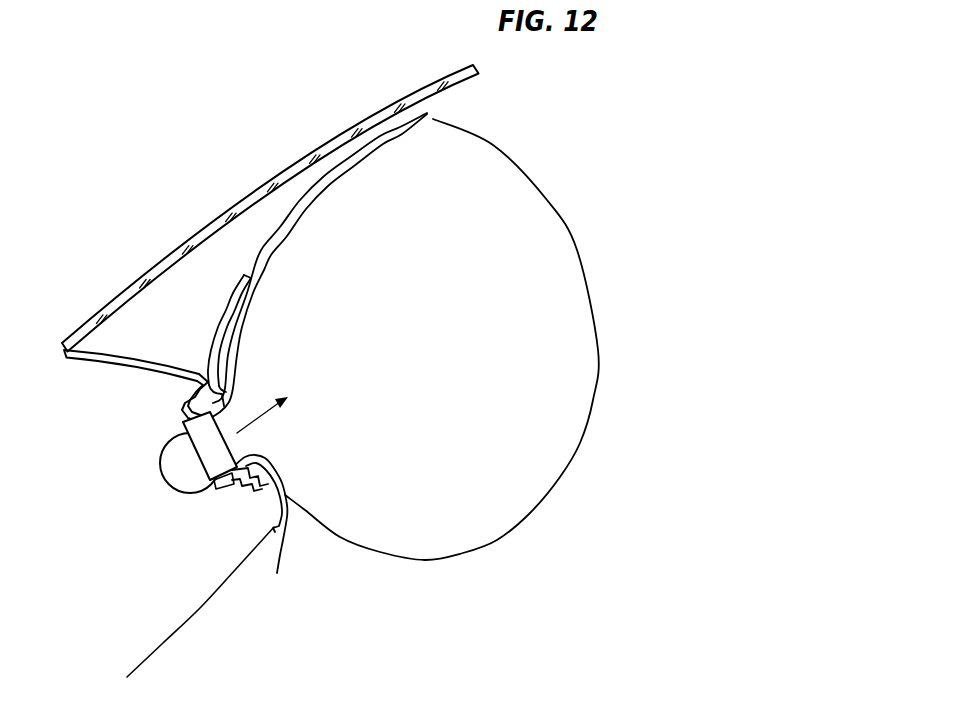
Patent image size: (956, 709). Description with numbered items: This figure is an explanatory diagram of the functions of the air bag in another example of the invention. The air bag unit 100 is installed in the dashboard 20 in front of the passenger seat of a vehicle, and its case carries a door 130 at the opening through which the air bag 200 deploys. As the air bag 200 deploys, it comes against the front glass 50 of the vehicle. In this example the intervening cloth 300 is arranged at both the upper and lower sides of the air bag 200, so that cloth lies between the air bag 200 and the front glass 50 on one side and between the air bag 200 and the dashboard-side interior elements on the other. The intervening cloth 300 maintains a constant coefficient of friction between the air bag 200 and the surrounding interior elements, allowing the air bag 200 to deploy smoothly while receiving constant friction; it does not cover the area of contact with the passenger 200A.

The dashboard 20 is at (132, 360).
The front glass 50 is at (257, 188).
The air bag unit 100 is at (150, 463).
The door 130 is at (227, 309).
The air bag 200 is at (552, 202).
The area of contact with the passenger 200A is at (612, 333).
The intervening cloth 300 is at (428, 108).